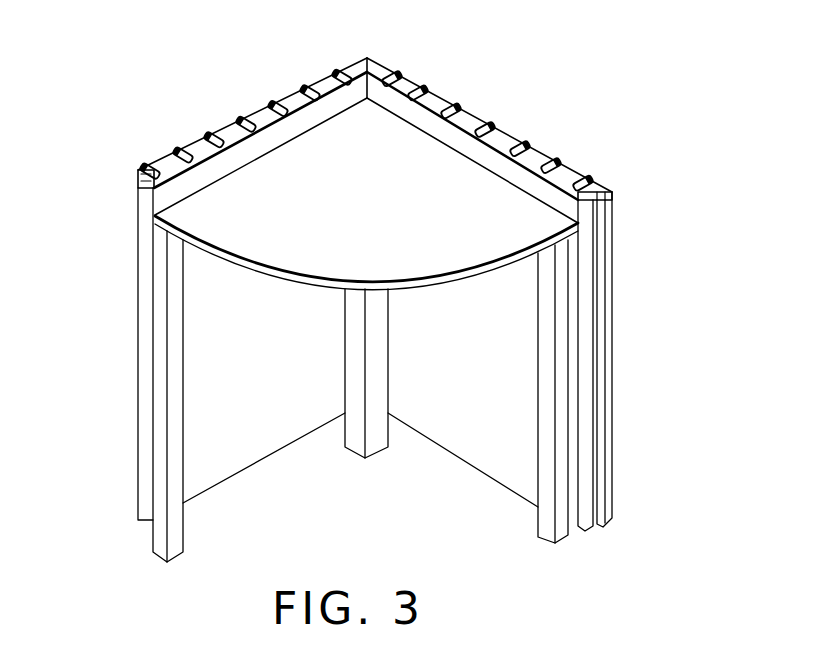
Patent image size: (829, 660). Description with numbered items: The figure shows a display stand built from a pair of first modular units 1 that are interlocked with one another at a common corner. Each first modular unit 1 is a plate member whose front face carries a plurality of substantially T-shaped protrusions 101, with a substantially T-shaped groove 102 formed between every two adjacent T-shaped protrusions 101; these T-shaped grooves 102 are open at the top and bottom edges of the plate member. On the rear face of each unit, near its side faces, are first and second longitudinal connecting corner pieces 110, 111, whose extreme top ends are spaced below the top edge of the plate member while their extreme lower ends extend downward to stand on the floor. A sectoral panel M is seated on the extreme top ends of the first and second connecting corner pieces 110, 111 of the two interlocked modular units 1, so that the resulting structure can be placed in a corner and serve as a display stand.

The first modular unit 1 is at (239, 110).
The T-shaped protrusion 101 is at (463, 103).
The T-shaped groove 102 is at (338, 52).
The first connecting corner piece 110 is at (562, 410).
The second connecting corner piece 111 is at (160, 322).
The sectoral panel M is at (508, 247).